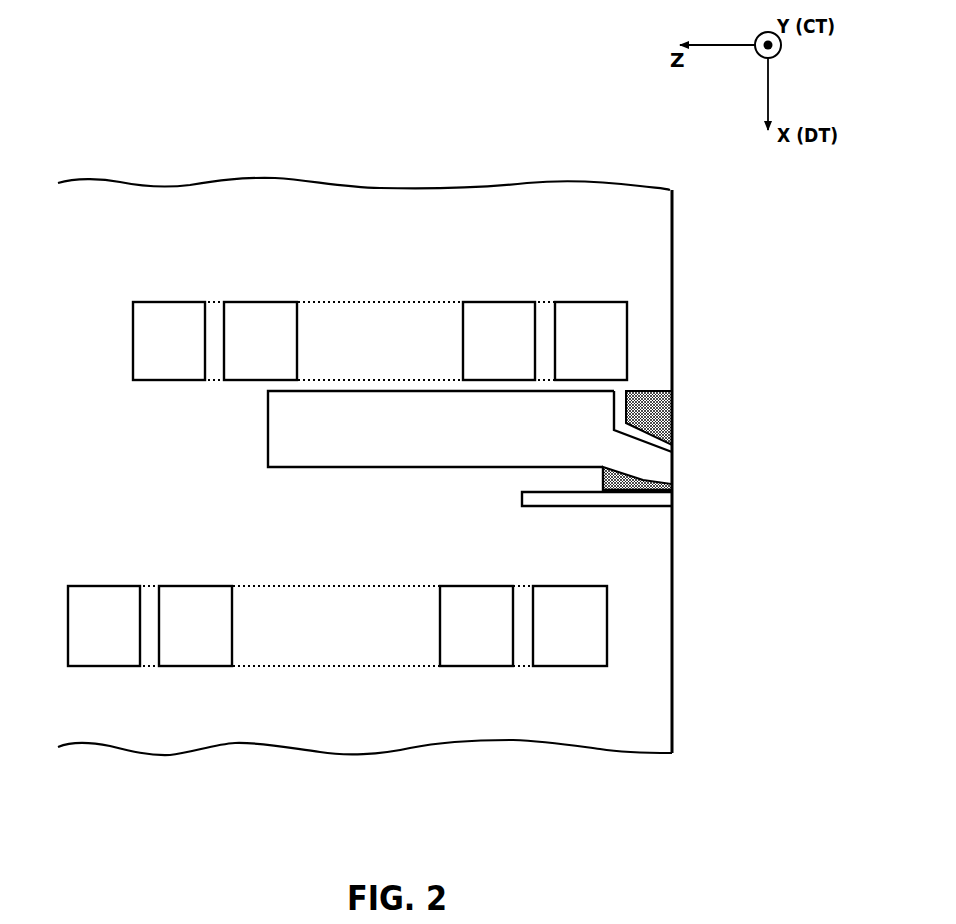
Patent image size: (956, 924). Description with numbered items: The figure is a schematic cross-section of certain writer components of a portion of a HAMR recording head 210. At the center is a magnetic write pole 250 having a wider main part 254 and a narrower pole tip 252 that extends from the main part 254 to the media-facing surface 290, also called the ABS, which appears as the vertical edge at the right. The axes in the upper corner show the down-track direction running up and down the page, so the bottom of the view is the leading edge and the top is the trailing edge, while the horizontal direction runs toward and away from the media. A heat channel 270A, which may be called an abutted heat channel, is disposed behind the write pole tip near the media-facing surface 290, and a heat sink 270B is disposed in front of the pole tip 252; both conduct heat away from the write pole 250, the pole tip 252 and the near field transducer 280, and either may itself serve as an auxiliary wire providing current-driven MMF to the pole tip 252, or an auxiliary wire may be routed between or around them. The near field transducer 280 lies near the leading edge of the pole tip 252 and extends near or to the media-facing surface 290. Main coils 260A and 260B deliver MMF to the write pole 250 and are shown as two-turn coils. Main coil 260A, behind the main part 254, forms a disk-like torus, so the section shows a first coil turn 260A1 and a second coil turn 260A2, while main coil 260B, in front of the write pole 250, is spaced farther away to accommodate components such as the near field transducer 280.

The recording head 210 is at (399, 404).
The magnetic write pole 250 is at (532, 462).
The pole tip 252 is at (665, 470).
The main part 254 is at (472, 435).
The main coil 260A is at (380, 299).
The first coil turn 260A1 is at (380, 341).
The second coil turn 260A2 is at (379, 341).
The main coil 260B is at (352, 692).
The heat channel 270A is at (660, 423).
The heat sink 270B is at (648, 484).
The near field transducer 280 is at (637, 503).
The media-facing surface 290 is at (675, 597).